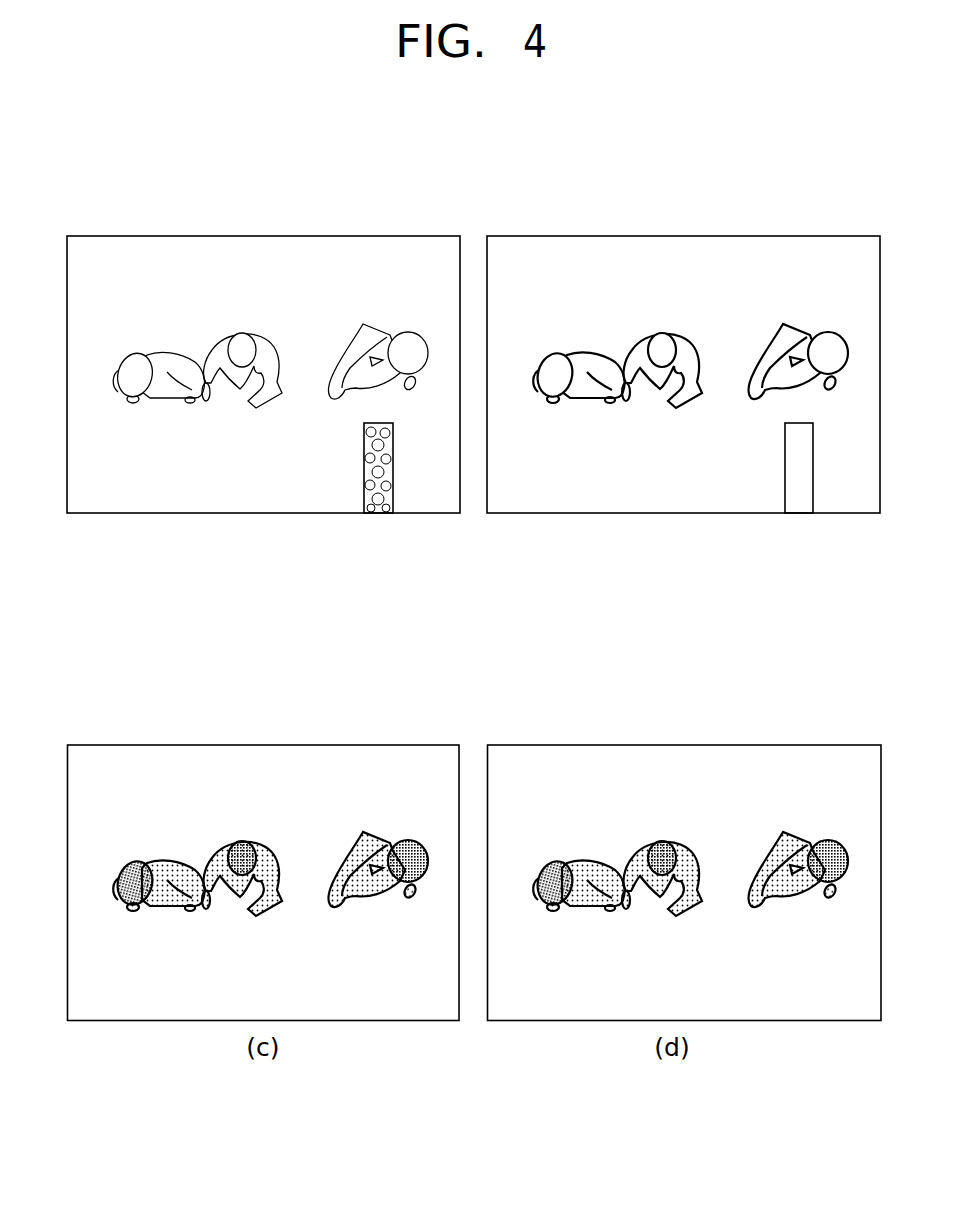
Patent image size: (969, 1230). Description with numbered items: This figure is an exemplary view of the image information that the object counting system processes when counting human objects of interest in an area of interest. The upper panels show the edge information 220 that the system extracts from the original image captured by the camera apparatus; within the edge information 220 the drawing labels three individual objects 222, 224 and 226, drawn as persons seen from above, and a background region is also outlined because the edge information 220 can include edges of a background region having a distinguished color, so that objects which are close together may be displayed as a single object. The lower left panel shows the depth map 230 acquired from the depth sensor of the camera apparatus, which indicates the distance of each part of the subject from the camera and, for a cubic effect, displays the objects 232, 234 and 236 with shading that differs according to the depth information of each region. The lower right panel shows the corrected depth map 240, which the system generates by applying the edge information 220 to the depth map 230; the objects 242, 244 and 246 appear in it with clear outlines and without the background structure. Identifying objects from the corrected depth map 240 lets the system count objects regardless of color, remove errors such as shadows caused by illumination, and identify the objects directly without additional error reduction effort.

The edge information 220 is at (298, 228).
The first person 222 is at (156, 348).
The second person 224 is at (240, 323).
The third person 226 is at (387, 322).
The depth map 230 is at (299, 739).
The first person region 232 is at (157, 857).
The second person region 234 is at (241, 836).
The third person region 236 is at (388, 828).
The corrected depth map 240 is at (719, 737).
The first person region 242 is at (577, 857).
The second person region 244 is at (661, 836).
The third person region 246 is at (809, 828).